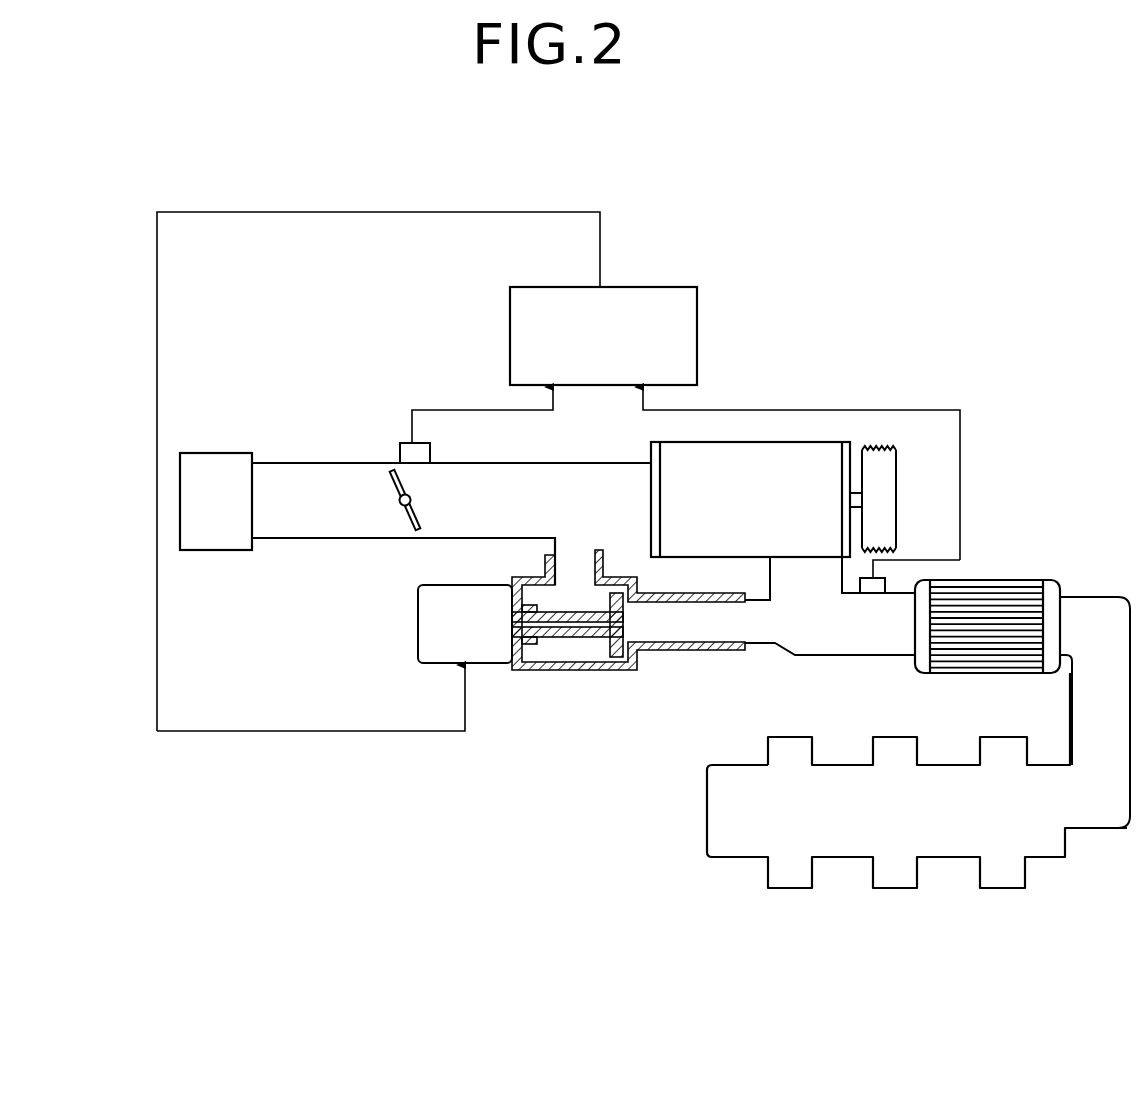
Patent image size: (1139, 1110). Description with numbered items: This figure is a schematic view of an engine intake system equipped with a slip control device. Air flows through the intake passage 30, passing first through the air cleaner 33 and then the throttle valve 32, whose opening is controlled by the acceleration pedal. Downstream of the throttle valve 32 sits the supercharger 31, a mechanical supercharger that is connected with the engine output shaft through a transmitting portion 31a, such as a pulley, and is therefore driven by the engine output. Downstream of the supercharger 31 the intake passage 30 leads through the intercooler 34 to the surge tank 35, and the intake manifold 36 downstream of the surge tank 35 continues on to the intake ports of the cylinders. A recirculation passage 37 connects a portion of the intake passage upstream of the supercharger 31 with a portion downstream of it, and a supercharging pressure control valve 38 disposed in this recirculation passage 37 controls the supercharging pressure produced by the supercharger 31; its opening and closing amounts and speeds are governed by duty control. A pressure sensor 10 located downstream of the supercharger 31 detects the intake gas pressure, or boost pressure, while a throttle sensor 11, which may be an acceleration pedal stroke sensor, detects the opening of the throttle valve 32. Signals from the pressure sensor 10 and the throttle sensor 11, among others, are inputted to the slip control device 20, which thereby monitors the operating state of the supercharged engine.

The pressure sensor 10 is at (887, 578).
The throttle sensor 11 is at (399, 442).
The slip control device 20 is at (692, 326).
The intake passage 30 is at (325, 538).
The supercharger 31 is at (772, 440).
The transmitting portion 31a is at (896, 450).
The throttle valve 32 is at (418, 487).
The air cleaner 33 is at (220, 545).
The intercooler 34 is at (1012, 578).
The surge tank 35 is at (712, 807).
The intake manifold 36 is at (780, 750).
The recirculation passage 37 is at (547, 547).
The supercharging pressure control valve 38 is at (640, 646).